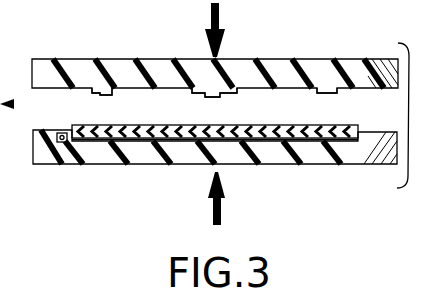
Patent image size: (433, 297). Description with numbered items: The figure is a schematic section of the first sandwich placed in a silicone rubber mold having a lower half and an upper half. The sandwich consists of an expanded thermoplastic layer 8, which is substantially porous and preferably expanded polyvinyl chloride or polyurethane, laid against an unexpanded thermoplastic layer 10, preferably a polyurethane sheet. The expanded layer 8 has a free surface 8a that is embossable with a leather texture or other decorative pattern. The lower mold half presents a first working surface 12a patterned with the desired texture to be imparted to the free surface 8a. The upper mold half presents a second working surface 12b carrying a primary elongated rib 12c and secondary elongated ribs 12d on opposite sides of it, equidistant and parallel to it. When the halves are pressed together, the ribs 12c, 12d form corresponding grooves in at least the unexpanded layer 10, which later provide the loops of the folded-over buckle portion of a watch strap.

The expanded thermoplastic layer 8 is at (346, 148).
The free surface 8a is at (312, 143).
The unexpanded thermoplastic layer 10 is at (358, 128).
The first working surface 12a is at (60, 142).
The second working surface 12b is at (173, 90).
The primary elongated rib 12c is at (221, 96).
The secondary elongated ribs 12d is at (94, 95).